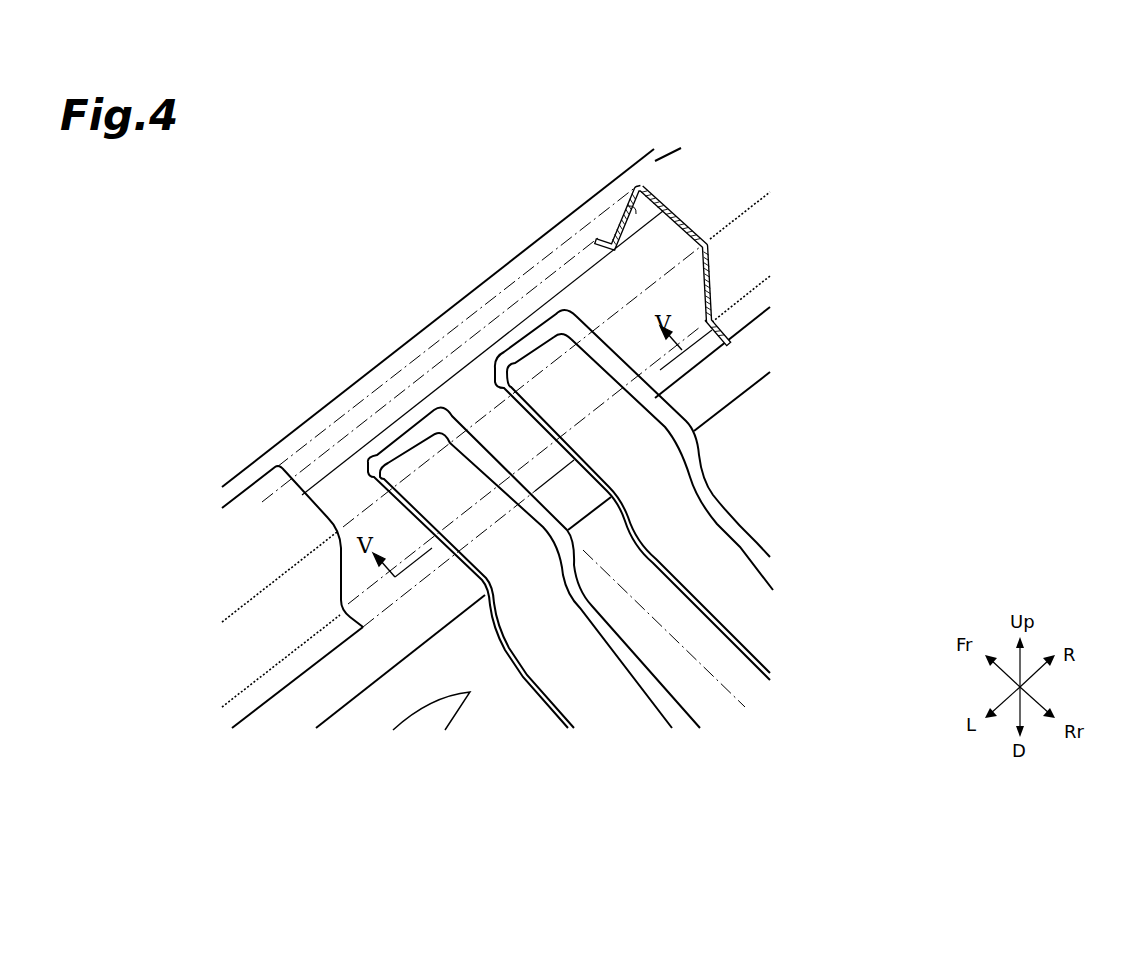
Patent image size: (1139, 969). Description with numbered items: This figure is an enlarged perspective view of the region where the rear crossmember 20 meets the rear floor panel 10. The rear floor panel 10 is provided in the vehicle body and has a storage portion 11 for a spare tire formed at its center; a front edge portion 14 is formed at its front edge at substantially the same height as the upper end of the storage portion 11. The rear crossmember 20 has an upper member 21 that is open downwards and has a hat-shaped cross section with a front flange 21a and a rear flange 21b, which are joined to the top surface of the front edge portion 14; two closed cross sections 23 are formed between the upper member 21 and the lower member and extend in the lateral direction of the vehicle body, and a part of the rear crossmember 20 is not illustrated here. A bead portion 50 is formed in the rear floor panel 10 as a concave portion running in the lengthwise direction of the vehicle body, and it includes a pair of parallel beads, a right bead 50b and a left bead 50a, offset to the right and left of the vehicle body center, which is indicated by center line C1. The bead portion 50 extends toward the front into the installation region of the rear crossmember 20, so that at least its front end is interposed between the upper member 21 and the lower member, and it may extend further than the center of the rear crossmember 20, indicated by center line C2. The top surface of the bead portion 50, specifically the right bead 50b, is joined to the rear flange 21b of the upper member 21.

The rear floor panel 10 is at (771, 418).
The storage portion 11 is at (776, 497).
The front edge portion 14 is at (741, 366).
The rear crossmember 20 is at (710, 203).
The upper member 21 is at (710, 204).
The front flange 21a is at (606, 234).
The rear flange 21b is at (744, 315).
The closed cross section 23 is at (625, 228).
The bead portion 50 is at (544, 479).
The left bead 50a is at (568, 690).
The right bead 50b is at (713, 573).
The center line C1 is at (693, 662).
The center line C2 is at (498, 406).